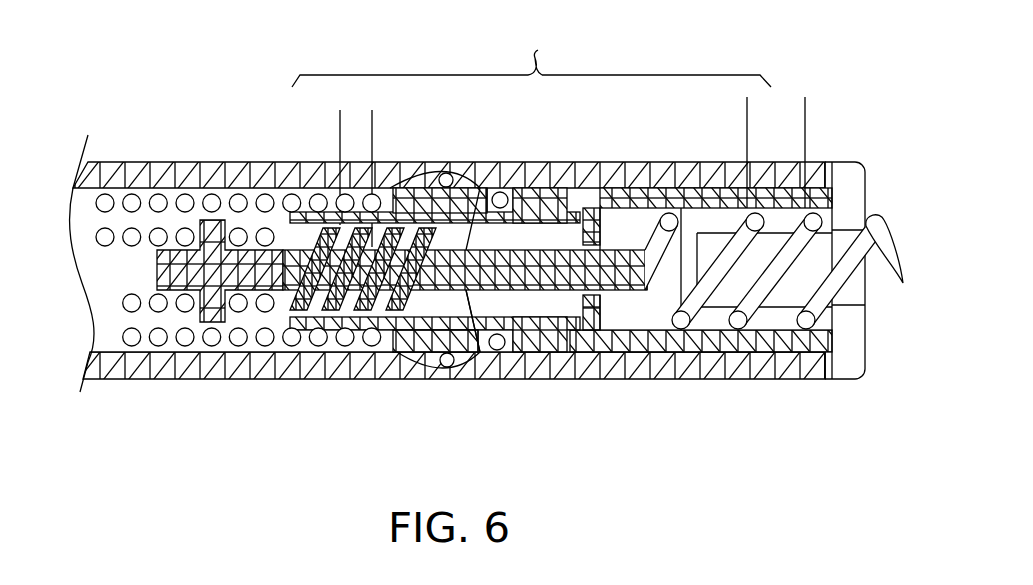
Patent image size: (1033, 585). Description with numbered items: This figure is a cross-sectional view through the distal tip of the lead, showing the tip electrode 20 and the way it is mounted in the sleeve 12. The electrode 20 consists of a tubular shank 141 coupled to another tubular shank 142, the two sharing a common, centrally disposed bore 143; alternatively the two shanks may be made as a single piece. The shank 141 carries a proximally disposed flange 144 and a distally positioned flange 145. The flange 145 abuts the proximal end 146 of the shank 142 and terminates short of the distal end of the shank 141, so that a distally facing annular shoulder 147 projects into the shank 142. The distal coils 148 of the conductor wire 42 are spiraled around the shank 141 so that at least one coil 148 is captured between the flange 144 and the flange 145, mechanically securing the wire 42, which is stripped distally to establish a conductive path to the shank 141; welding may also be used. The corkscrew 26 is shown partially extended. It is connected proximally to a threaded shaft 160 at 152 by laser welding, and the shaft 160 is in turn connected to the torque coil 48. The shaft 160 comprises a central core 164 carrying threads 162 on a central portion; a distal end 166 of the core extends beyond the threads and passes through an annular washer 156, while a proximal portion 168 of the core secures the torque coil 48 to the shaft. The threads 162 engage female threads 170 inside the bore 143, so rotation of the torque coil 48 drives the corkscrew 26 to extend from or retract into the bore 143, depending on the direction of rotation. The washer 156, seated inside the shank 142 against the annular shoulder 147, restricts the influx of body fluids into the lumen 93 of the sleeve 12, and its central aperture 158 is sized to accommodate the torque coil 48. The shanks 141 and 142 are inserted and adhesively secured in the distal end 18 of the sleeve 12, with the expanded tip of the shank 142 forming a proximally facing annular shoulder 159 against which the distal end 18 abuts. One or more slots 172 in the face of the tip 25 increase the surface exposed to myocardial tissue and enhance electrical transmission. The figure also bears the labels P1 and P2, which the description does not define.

The sleeve 12 is at (113, 162).
The distal end 18 is at (731, 154).
The tip electrode 20 is at (531, 55).
The tip 25 is at (846, 166).
The corkscrew 26 is at (886, 222).
The conductor wire 42 is at (185, 346).
The torque coil 48 is at (270, 310).
The lumen 93 is at (126, 283).
The tubular shank 141 is at (485, 335).
The tubular shank 142 is at (715, 343).
The bore 143 is at (573, 352).
The proximally disposed flange 144 is at (413, 343).
The distally positioned flange 145 is at (513, 348).
The proximal end 146 is at (615, 347).
The distally facing annular shoulder 147 is at (572, 196).
The distal coils 148 is at (346, 344).
The connection 152 is at (643, 291).
The annular washer 156 is at (586, 208).
The central aperture 158 is at (625, 188).
The proximally facing annular shoulder 159 is at (820, 367).
The threaded shaft 160 is at (443, 172).
The threads 162 is at (345, 336).
The central core 164 is at (517, 330).
The distal end 166 is at (530, 249).
The proximal portion 168 is at (165, 276).
The female threads 170 is at (376, 212).
The slots 172 is at (853, 183).
The position P1 is at (356, 178).
The position P2 is at (776, 152).